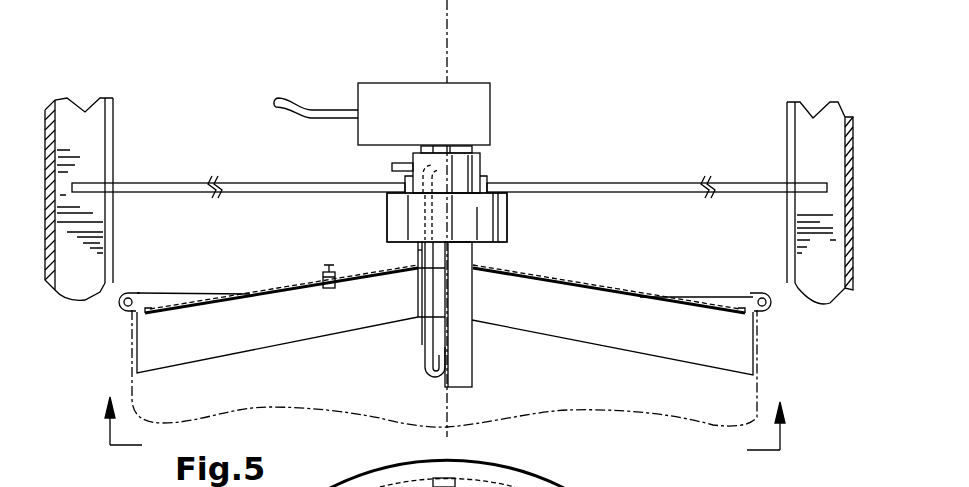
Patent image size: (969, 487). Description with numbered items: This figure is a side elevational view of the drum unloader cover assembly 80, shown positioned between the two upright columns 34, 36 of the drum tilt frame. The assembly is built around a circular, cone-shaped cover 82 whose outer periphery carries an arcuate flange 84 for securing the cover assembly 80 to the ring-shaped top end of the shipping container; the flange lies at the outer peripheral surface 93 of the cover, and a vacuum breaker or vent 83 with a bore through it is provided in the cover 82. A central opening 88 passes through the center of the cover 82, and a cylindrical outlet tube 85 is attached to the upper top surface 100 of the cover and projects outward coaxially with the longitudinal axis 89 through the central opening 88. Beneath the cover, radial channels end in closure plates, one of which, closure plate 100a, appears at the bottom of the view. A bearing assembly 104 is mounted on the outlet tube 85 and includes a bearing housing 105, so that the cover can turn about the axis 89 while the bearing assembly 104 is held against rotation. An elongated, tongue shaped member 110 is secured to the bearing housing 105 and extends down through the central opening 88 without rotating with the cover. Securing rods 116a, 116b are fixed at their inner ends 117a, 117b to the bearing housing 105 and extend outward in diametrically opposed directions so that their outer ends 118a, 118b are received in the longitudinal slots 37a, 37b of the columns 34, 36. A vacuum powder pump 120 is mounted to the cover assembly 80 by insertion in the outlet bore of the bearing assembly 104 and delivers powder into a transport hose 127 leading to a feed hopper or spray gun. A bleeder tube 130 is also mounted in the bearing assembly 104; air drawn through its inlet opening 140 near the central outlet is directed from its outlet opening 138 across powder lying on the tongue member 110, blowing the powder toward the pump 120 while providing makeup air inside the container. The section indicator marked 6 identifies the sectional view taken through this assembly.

The upright column 34 is at (117, 100).
The upright column 36 is at (783, 103).
The longitudinal slot 37a is at (88, 140).
The longitudinal slot 37b is at (805, 155).
The securing rod 116a is at (152, 183).
The securing rod 116b is at (573, 183).
The inner end of securing rod 117a is at (390, 178).
The inner end of securing rod 117b is at (495, 183).
The outer end of securing rod 118a is at (85, 184).
The outer end of securing rod 118b is at (817, 192).
The vacuum powder pump 120 is at (468, 107).
The transport hose 127 is at (308, 112).
The inlet opening 140 is at (392, 167).
The longitudinal axis 89 is at (443, 170).
The bearing assembly 104 is at (530, 203).
The bearing housing 105 is at (487, 225).
The central opening 88 is at (417, 288).
The bleeder tube 130 is at (422, 343).
The outlet opening 138 is at (444, 350).
The tongue shaped member 110 is at (467, 352).
The outlet tube 85 is at (417, 250).
The vacuum breaker or vent 83 is at (322, 278).
The upper top surface of cover 100 is at (444, 334).
The cone-shaped cover 82 is at (553, 280).
The arcuate flange 84 is at (155, 300).
The outer peripheral surface 93 is at (763, 318).
The section line 6 is at (445, 411).
The drum unloader cover assembly 80 is at (697, 486).
The closure plate 100a is at (447, 485).